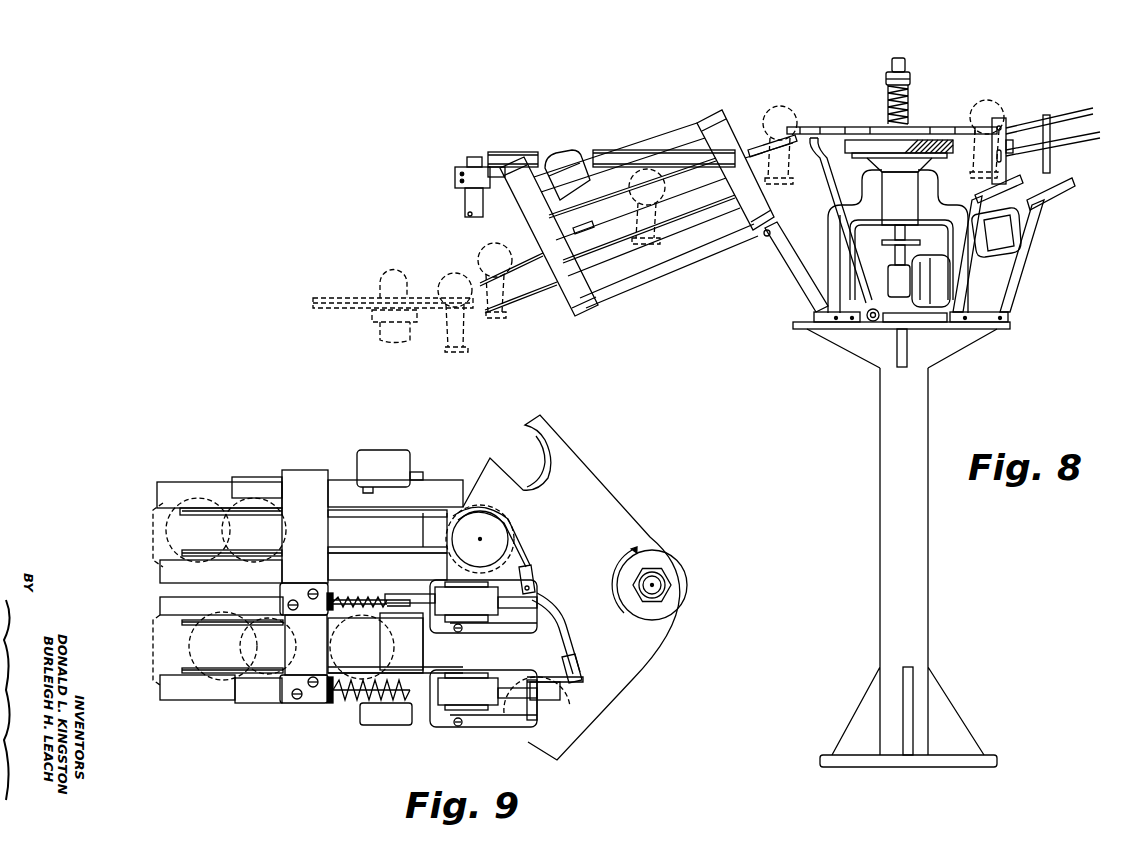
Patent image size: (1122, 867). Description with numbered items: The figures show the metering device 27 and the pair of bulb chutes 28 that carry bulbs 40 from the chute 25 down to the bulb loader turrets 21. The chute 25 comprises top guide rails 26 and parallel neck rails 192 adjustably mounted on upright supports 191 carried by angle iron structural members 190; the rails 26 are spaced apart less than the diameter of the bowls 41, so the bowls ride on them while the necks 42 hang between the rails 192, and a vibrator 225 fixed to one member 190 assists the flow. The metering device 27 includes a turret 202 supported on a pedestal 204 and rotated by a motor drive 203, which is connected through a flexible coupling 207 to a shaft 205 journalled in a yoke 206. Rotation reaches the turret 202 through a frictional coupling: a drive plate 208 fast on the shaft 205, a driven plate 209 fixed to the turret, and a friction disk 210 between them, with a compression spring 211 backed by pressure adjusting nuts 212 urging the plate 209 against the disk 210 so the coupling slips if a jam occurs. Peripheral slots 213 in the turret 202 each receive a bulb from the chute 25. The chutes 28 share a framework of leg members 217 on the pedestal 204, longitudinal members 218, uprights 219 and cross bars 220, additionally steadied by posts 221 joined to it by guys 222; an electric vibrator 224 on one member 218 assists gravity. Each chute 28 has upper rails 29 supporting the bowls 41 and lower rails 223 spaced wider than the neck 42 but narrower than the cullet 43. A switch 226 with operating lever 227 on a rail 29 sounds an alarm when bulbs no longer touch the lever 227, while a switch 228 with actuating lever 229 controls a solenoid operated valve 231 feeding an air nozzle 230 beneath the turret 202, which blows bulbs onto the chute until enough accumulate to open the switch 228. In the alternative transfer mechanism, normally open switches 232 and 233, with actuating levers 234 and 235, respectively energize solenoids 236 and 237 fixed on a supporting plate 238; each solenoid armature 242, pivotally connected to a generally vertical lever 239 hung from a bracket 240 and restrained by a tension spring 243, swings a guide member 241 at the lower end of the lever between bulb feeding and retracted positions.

In FIG. 8, the bulb loader turret 21 is at (373, 250).
In FIG. 8, the chute 25 is at (1085, 212).
In FIG. 8, the guide rails 26 is at (1063, 112).
In FIG. 8, the metering device 27 is at (1033, 363).
In FIG. 8, the chutes 28 is at (567, 104).
In FIG. 9, the chutes 28 is at (291, 430).
In FIG. 8, the guide rails 29 is at (718, 168).
In FIG. 9, the guide rails 29 is at (163, 556).
In FIG. 8, the bulbs 40 is at (1003, 90).
In FIG. 8, the bowls 41 is at (495, 248).
In FIG. 8, the necks 42 is at (507, 290).
In FIG. 8, the cullet 43 is at (467, 348).
In FIG. 8, the angle iron structural members 190 is at (958, 280).
In FIG. 8, the upright supports 191 is at (1000, 122).
In FIG. 8, the neck rails 192 is at (1095, 150).
In FIG. 8, the turret 202 is at (830, 127).
In FIG. 9, the turret 202 is at (598, 492).
In FIG. 8, the motor drive 203 is at (913, 300).
In FIG. 8, the pedestal 204 is at (878, 493).
In FIG. 8, the shaft 205 is at (890, 66).
In FIG. 9, the shaft 205 is at (652, 582).
In FIG. 8, the yoke 206 is at (830, 257).
In FIG. 8, the flexible coupling 207 is at (913, 252).
In FIG. 8, the drive plate 208 is at (900, 206).
In FIG. 8, the driven plate 209 is at (895, 142).
In FIG. 8, the friction disk 210 is at (920, 145).
In FIG. 8, the compression spring 211 is at (903, 140).
In FIG. 8, the pressure adjusting nuts 212 is at (887, 82).
In FIG. 9, the pressure adjusting nuts 212 is at (660, 568).
In FIG. 9, the slots 213 is at (523, 463).
In FIG. 8, the leg members 217 is at (810, 304).
In FIG. 8, the longitudinal members 218 is at (666, 142).
In FIG. 9, the longitudinal members 218 is at (253, 477).
In FIG. 8, the uprights 219 is at (758, 204).
In FIG. 8, the cross bars 220 is at (710, 118).
In FIG. 9, the cross bars 220 is at (303, 492).
In FIG. 8, the posts 221 is at (465, 160).
In FIG. 8, the guys 222 is at (607, 148).
In FIG. 8, the rails 223 is at (623, 243).
In FIG. 9, the rails 223 is at (205, 522).
In FIG. 8, the electric vibrator 224 is at (558, 160).
In FIG. 8, the vibrator 225 is at (1007, 240).
In FIG. 8, the switch 226 is at (587, 227).
In FIG. 8, the operating lever 227 is at (612, 267).
In FIG. 8, the switch 228 is at (758, 108).
In FIG. 8, the actuating lever 229 is at (737, 122).
In FIG. 8, the air nozzle 230 is at (813, 140).
In FIG. 8, the solenoid operated valve 231 is at (865, 320).
In FIG. 9, the switch 232 is at (373, 720).
In FIG. 9, the switch 233 is at (385, 463).
In FIG. 9, the actuating lever 234 is at (357, 703).
In FIG. 9, the actuating lever 235 is at (368, 490).
In FIG. 9, the solenoid 236 is at (450, 698).
In FIG. 9, the solenoid 237 is at (492, 597).
In FIG. 9, the supporting plate 238 is at (465, 660).
In FIG. 9, the lever 239 is at (537, 592).
In FIG. 9, the bracket 240 is at (557, 703).
In FIG. 9, the guide member 241 is at (507, 517).
In FIG. 9, the armature 242 is at (412, 603).
In FIG. 9, the spring 243 is at (357, 688).